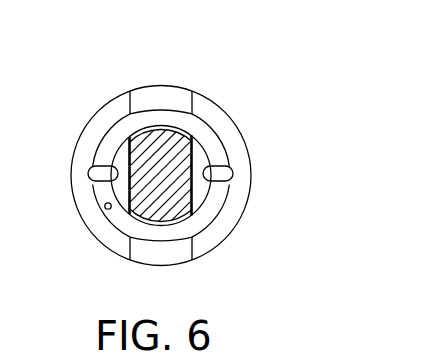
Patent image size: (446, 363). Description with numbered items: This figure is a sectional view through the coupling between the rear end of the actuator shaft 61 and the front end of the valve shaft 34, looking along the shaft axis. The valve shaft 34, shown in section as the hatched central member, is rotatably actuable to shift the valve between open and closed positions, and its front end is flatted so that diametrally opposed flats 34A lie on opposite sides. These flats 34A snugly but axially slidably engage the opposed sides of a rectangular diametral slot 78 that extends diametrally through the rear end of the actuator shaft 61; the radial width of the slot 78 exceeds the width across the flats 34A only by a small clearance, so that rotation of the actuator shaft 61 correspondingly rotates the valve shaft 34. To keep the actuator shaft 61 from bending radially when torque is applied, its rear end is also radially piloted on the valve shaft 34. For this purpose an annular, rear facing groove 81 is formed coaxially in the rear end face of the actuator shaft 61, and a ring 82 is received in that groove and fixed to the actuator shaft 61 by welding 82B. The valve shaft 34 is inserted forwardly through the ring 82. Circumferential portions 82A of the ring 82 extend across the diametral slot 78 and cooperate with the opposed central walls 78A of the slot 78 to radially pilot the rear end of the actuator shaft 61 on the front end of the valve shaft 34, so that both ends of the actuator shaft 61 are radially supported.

The actuator shaft 61 is at (104, 91).
The diametral slot 78 is at (131, 108).
The central walls of the diametral slot 78A is at (161, 138).
The circumferential portions of the ring 82A is at (176, 118).
The welding 82B is at (222, 178).
The flats 34A is at (180, 196).
The valve shaft 34 is at (187, 206).
The ring 82 is at (123, 223).
The annular rear facing groove 81 is at (108, 212).